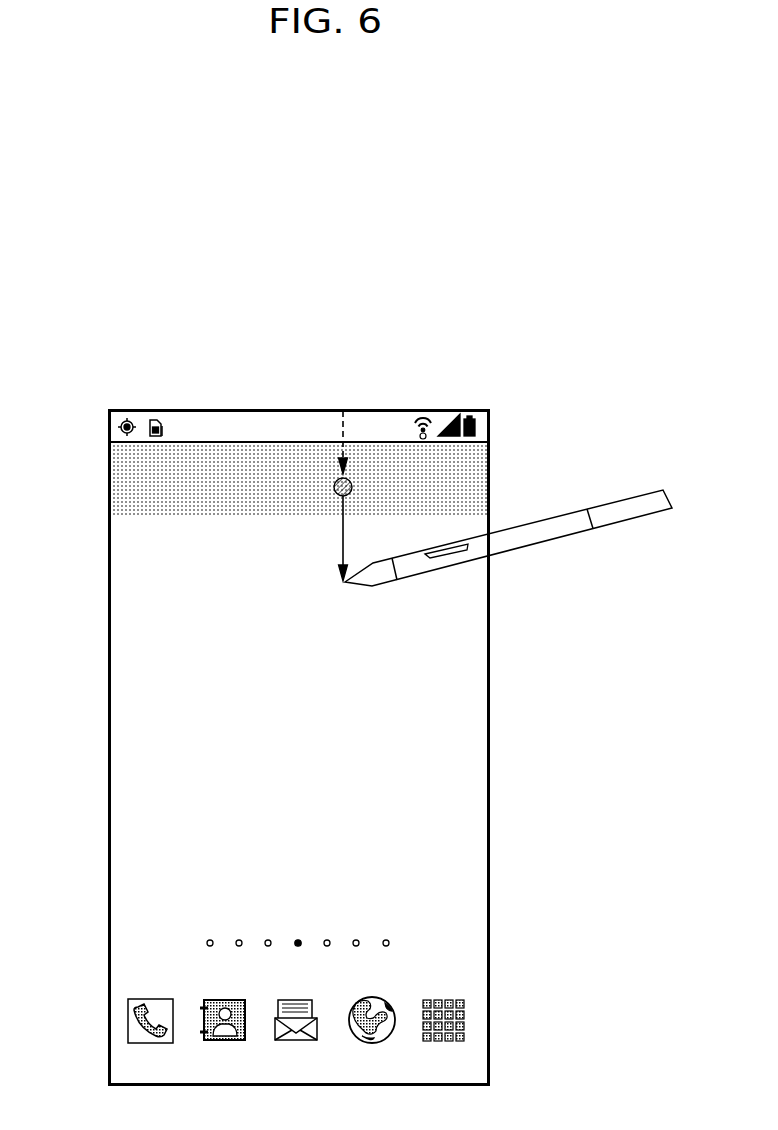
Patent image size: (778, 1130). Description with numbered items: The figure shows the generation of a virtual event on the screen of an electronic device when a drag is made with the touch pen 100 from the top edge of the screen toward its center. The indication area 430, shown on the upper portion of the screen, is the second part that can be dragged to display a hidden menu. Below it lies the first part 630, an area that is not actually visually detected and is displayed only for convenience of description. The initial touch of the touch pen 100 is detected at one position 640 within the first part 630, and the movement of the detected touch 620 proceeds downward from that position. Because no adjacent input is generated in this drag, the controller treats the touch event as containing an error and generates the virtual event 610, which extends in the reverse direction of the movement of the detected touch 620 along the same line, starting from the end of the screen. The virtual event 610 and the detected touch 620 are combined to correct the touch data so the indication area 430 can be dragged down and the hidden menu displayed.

The touch pen 100 is at (637, 519).
The indication area 430 is at (492, 423).
The virtual event 610 is at (345, 427).
The detected touch 620 is at (343, 528).
The first part 630 is at (118, 481).
The position where initial touch is detected 640 is at (352, 485).